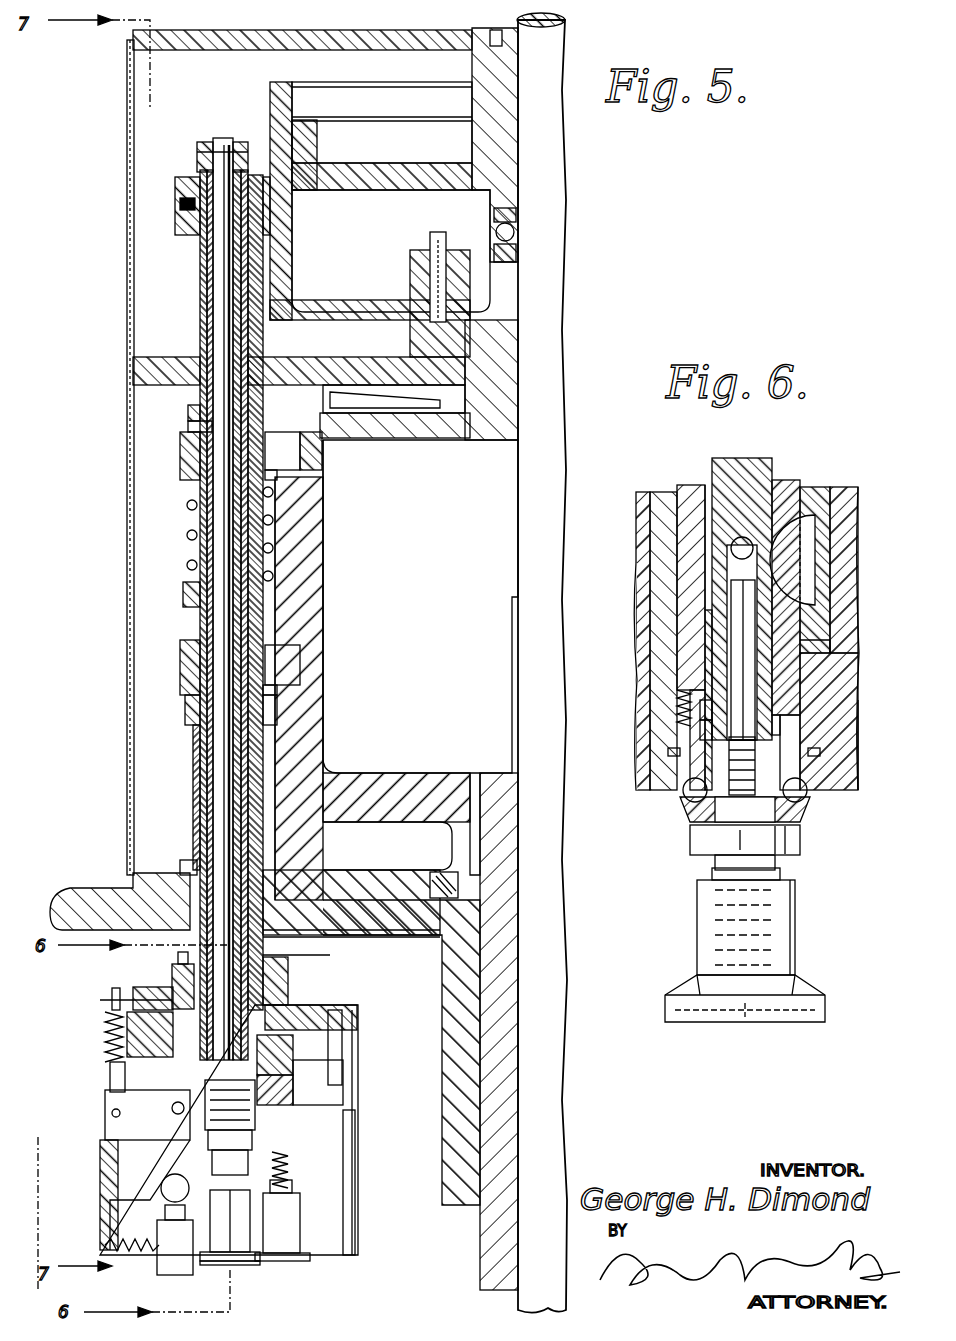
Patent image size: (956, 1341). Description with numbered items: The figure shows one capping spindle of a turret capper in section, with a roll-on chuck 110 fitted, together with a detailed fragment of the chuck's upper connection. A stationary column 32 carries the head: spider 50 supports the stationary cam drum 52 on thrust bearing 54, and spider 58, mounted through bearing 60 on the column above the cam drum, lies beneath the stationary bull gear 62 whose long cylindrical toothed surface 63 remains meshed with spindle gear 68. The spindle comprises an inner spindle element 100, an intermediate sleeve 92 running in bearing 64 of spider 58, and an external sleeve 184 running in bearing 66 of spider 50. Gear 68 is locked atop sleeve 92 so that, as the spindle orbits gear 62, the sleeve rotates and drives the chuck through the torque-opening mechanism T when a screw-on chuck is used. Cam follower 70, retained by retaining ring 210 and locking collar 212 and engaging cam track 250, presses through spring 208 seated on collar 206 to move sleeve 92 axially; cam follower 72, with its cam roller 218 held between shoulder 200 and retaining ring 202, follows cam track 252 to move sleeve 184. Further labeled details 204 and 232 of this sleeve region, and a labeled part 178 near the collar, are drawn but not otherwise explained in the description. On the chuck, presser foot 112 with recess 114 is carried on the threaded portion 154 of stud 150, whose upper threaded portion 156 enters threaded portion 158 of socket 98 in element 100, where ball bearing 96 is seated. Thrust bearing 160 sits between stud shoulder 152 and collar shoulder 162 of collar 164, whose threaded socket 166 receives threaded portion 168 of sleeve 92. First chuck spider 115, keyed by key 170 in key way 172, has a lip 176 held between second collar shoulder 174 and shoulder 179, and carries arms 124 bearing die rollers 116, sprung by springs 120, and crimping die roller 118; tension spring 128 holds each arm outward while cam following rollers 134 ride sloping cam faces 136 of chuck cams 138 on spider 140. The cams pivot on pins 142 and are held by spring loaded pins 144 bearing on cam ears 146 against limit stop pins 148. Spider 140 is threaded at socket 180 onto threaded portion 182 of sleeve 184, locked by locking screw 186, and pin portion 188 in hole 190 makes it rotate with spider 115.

In FIG. 5, the torque-opening mechanism T is at (118, 302).
In FIG. 5, the stationary column 32 is at (560, 148).
In FIG. 5, the spider 50 is at (80, 890).
In FIG. 5, the cam drum 52 is at (323, 748).
In FIG. 5, the thrust bearing 54 is at (460, 880).
In FIG. 5, the spider 58 is at (150, 366).
In FIG. 5, the bearing 60 is at (515, 225).
In FIG. 5, the stationary bull gear 62 is at (330, 150).
In FIG. 5, the cylindrical toothed surface 63 is at (272, 92).
In FIG. 5, the bearing 64 is at (262, 352).
In FIG. 5, the bearing 66 is at (185, 865).
In FIG. 5, the spindle gear 68 is at (178, 190).
In FIG. 5, the cam follower 70 is at (170, 455).
In FIG. 5, the cam follower 72 is at (168, 661).
In FIG. 5, the intermediate spindle sleeve 92 is at (252, 836).
In FIG. 6, the intermediate spindle sleeve 92 is at (690, 495).
In FIG. 6, the ball bearing 96 is at (762, 475).
In FIG. 6, the socket 98 is at (752, 588).
In FIG. 5, the inner spindle element 100 is at (232, 852).
In FIG. 6, the inner spindle element 100 is at (740, 475).
In FIG. 5, the roll-on chuck 110 is at (362, 1010).
In FIG. 5, the presser foot 112 is at (260, 1270).
In FIG. 6, the presser foot 112 is at (800, 612).
In FIG. 6, the recess 114 is at (835, 648).
In FIG. 5, the first chuck spider 115 is at (356, 1150).
In FIG. 6, the first chuck spider 115 is at (850, 745).
In FIG. 5, the die rollers 116 is at (310, 1270).
In FIG. 5, the crimping die roller 118 is at (200, 1258).
In FIG. 5, the springs 120 is at (300, 1182).
In FIG. 5, the arms 124 is at (300, 1240).
In FIG. 5, the tension spring 128 is at (135, 1258).
In FIG. 5, the cam following rollers 134 is at (165, 1200).
In FIG. 5, the sloping cam faces 136 is at (175, 1165).
In FIG. 5, the chuck cams 138 is at (110, 1058).
In FIG. 5, the spider 140 is at (345, 1080).
In FIG. 6, the spider 140 is at (640, 515).
In FIG. 5, the pins 142 is at (104, 1040).
In FIG. 5, the spring loaded pins 144 is at (108, 1012).
In FIG. 5, the cam ears 146 is at (112, 1098).
In FIG. 5, the limit stop pins 148 is at (110, 1110).
In FIG. 6, the stud 150 is at (780, 875).
In FIG. 6, the stud shoulder 152 is at (800, 840).
In FIG. 6, the threaded portion 154 is at (780, 915).
In FIG. 6, the threaded portion 156 is at (800, 715).
In FIG. 6, the threaded portion 158 is at (720, 838).
In FIG. 6, the thrust bearing 160 is at (810, 812).
In FIG. 6, the collar shoulder 162 is at (690, 775).
In FIG. 5, the collar 164 is at (205, 1136).
In FIG. 6, the collar 164 is at (800, 680).
In FIG. 6, the threaded socket 166 is at (700, 712).
In FIG. 6, the threaded portion 168 is at (700, 728).
In FIG. 5, the key 170 is at (270, 1050).
In FIG. 6, the key 170 is at (812, 545).
In FIG. 6, the key way 172 is at (800, 620).
In FIG. 6, the second collar shoulder 174 is at (680, 694).
In FIG. 6, the lip 176 is at (700, 670).
In FIG. 6, the spring 178 is at (700, 748).
In FIG. 6, the shoulder 179 is at (692, 650).
In FIG. 5, the socket 180 is at (290, 966).
In FIG. 5, the threaded portion 182 is at (268, 952).
In FIG. 5, the external sleeve element 184 is at (194, 764).
In FIG. 5, the locking screw 186 is at (170, 966).
In FIG. 5, the portion of pin 188 is at (320, 1098).
In FIG. 5, the hole 190 is at (345, 1050).
In FIG. 5, the shoulder 200 is at (277, 716).
In FIG. 5, the retaining ring 202 is at (323, 622).
In FIG. 5, the wall 204 is at (323, 580).
In FIG. 5, the collar 206 is at (183, 592).
In FIG. 5, the spring 208 is at (186, 548).
In FIG. 5, the retaining ring 210 is at (190, 428).
In FIG. 5, the locking collar 212 is at (190, 408).
In FIG. 5, the cam roller 218 is at (277, 690).
In FIG. 5, the key 232 is at (300, 458).
In FIG. 5, the cam track 250 is at (270, 482).
In FIG. 5, the cam track 252 is at (300, 660).